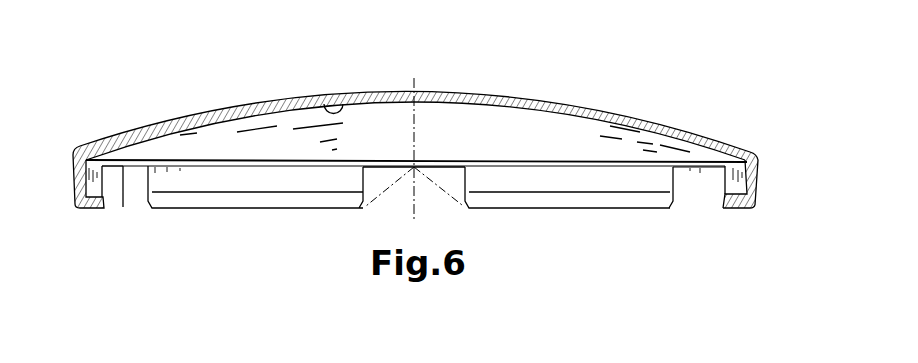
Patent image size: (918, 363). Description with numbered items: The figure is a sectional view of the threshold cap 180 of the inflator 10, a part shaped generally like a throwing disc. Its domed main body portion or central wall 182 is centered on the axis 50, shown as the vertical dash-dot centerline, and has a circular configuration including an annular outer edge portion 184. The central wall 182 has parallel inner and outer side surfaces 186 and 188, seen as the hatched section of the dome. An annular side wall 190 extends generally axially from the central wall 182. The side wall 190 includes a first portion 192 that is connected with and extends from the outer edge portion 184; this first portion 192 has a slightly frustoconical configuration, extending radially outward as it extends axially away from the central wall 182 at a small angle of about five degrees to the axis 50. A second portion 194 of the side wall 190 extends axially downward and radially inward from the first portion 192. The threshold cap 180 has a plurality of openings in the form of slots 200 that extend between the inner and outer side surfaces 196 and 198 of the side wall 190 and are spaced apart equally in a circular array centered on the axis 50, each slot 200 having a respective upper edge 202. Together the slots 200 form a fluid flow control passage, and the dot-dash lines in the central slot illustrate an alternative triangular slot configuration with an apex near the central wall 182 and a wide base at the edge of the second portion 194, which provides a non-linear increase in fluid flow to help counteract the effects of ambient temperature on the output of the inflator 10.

The inflator 10 is at (765, 113).
The axis 50 is at (415, 82).
The threshold cap 180 is at (644, 80).
The central wall 182 is at (531, 99).
The outer edge portion 184 is at (422, 173).
The inner side surface 186 is at (341, 108).
The outer side surface 188 is at (278, 102).
The side wall 190 is at (762, 169).
The first portion 192 is at (72, 165).
The second portion 194 is at (75, 207).
The inner side surface 196 is at (746, 185).
The outer side surface 198 is at (762, 188).
The slots 200 is at (140, 210).
The upper edge 202 is at (123, 167).